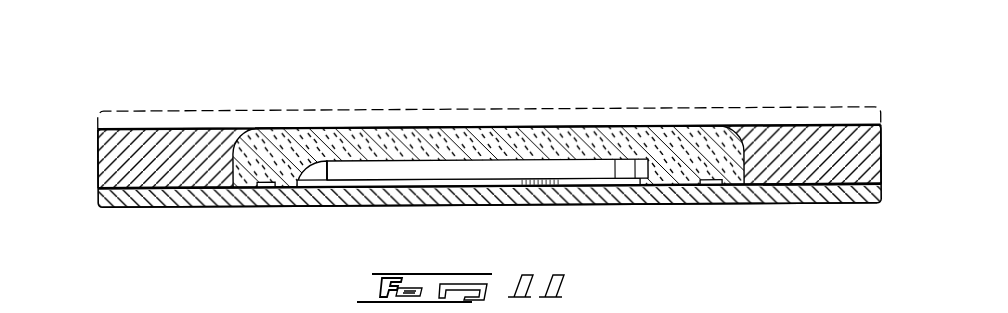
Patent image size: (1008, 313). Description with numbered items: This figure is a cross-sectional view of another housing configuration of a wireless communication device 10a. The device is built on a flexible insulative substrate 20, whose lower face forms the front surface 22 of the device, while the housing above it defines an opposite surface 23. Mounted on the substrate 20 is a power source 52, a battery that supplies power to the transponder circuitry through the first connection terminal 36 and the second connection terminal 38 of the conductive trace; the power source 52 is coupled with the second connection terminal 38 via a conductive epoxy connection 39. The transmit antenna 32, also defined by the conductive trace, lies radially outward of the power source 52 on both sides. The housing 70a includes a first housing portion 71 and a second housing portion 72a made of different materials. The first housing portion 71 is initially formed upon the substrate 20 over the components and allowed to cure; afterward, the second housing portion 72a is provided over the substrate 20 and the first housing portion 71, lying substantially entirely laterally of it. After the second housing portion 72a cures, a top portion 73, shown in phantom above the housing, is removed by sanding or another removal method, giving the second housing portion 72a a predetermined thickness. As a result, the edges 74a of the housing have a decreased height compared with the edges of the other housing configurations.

The wireless communication device 10a is at (779, 57).
The substrate 20 is at (780, 206).
The front surface 22 is at (176, 209).
The surface 23 is at (665, 125).
The transmit antenna 32 is at (263, 188).
The first connection terminal 36 is at (498, 187).
The second connection terminal 38 is at (305, 187).
The conductive epoxy connection 39 is at (321, 161).
The power source 52 is at (397, 172).
The housing 70a is at (182, 90).
The first housing portion 71 is at (504, 127).
The second housing portion 72a is at (97, 148).
The top portion 73 is at (585, 107).
The edges 74a is at (97, 172).